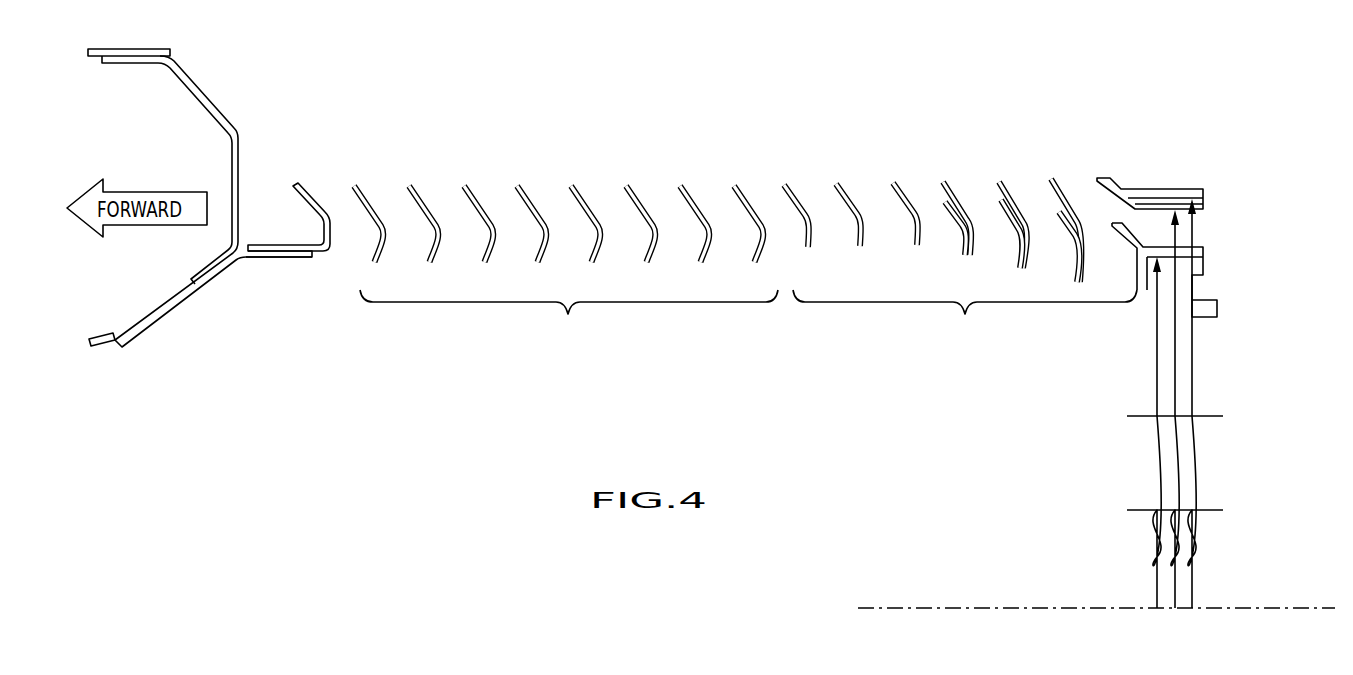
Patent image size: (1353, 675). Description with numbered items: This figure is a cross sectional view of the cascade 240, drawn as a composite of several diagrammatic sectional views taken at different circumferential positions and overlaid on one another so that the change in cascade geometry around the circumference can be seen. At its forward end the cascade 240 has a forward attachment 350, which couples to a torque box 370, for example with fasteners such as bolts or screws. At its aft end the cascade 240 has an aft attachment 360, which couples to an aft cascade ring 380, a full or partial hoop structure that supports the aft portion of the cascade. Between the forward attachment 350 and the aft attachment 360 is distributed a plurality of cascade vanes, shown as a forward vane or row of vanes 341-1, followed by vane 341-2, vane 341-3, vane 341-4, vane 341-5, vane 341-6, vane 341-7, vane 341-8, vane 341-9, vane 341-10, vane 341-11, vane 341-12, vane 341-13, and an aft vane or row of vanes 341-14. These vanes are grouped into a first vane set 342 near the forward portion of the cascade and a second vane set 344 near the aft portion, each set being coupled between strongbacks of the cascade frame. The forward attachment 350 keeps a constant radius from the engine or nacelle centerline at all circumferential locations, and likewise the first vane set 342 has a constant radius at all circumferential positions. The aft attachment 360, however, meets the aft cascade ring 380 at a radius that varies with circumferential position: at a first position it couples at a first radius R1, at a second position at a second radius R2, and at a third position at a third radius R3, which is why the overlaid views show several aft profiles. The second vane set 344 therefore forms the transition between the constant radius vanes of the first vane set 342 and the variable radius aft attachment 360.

The cascade 240 is at (745, 187).
The forward attachment 350 is at (300, 183).
The torque box 370 is at (268, 258).
The vane 341-1 is at (355, 182).
The vane 341-2 is at (424, 169).
The vane 341-3 is at (464, 182).
The vane 341-4 is at (530, 169).
The vane 341-5 is at (571, 182).
The vane 341-6 is at (638, 169).
The vane 341-7 is at (679, 182).
The vane 341-8 is at (748, 169).
The vane 341-9 is at (788, 182).
The vane 341-10 is at (852, 169).
The vane 341-11 is at (898, 181).
The vane 341-12 is at (962, 169).
The vane 341-13 is at (1005, 180).
The vane 341-14 is at (1057, 178).
The first vane set 342 is at (566, 231).
The second vane set 344 is at (957, 221).
The aft attachment 360 is at (1115, 185).
The aft cascade ring 380 is at (1217, 308).
The first radius R1 is at (1157, 333).
The second radius R2 is at (1175, 367).
The third radius R3 is at (1192, 346).